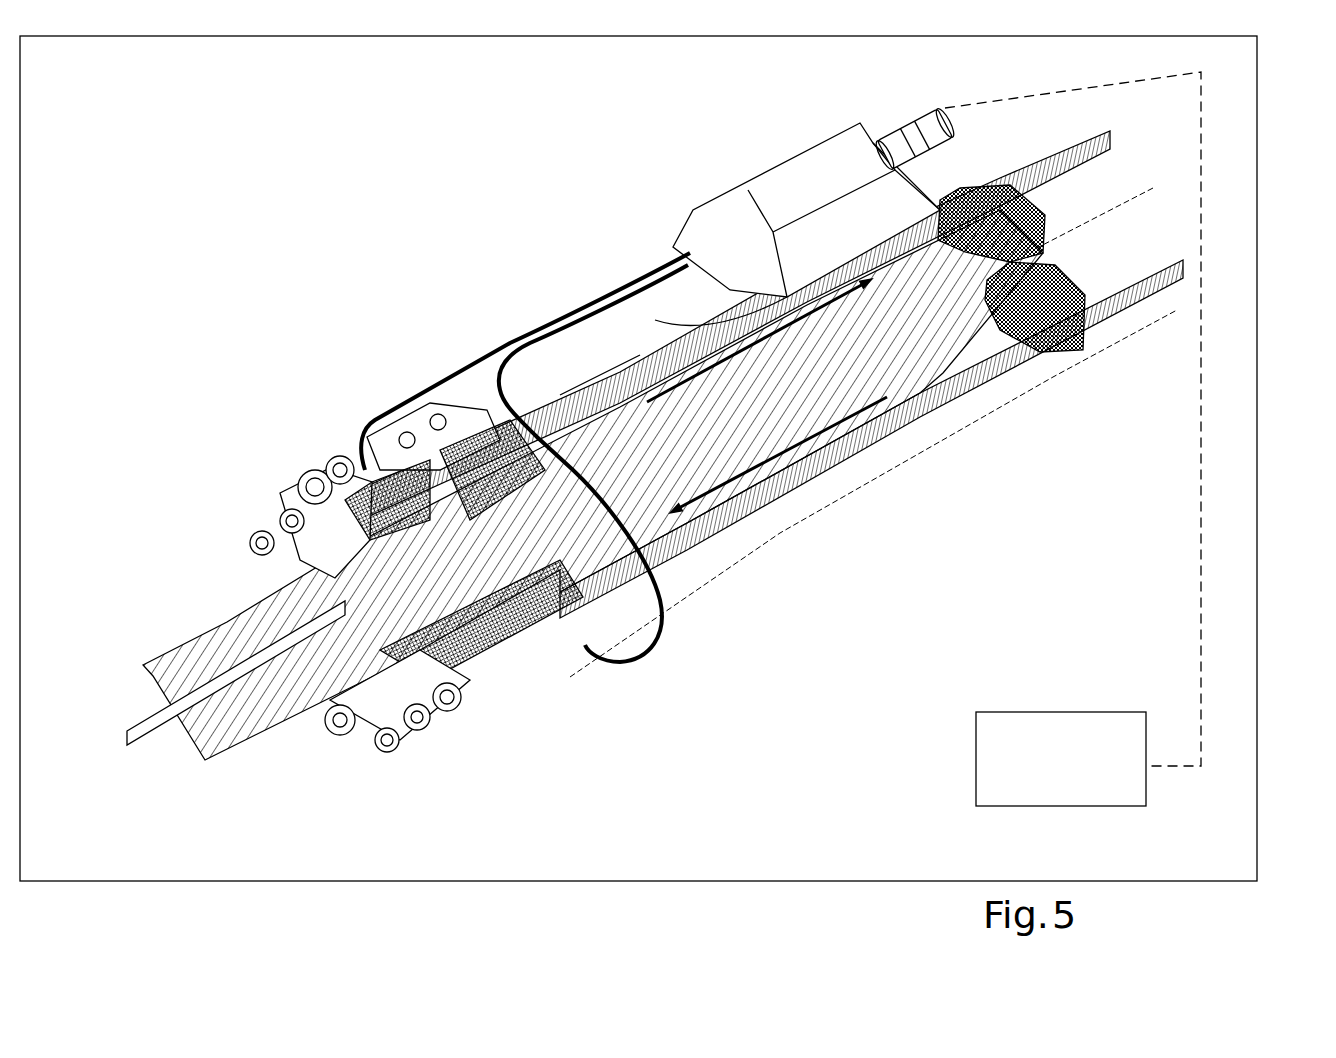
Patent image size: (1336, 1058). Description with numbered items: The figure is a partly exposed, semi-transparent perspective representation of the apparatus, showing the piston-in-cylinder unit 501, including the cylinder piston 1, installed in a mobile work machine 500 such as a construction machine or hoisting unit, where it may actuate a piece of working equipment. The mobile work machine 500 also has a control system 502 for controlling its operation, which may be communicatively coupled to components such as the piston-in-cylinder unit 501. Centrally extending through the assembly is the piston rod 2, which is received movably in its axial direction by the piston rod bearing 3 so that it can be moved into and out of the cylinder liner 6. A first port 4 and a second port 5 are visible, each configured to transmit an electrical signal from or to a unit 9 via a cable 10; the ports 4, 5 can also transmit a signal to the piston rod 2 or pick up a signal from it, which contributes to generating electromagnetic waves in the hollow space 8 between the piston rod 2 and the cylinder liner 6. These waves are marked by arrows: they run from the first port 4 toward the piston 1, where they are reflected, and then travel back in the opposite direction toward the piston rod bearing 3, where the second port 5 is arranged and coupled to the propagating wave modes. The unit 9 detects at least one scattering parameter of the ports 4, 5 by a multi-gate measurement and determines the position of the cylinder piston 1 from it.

The cylinder piston 1 is at (1070, 317).
The piston rod 2 is at (258, 705).
The piston rod bearing 3 is at (330, 468).
The first port 4 is at (353, 497).
The second port 5 is at (498, 660).
The cylinder liner 6 is at (623, 355).
The hollow space 8 is at (920, 373).
The unit 9 is at (787, 200).
The cable 10 is at (465, 372).
The mobile work machine 500 is at (1258, 110).
The piston-in-cylinder unit 501 is at (842, 98).
The control system 502 is at (1085, 772).